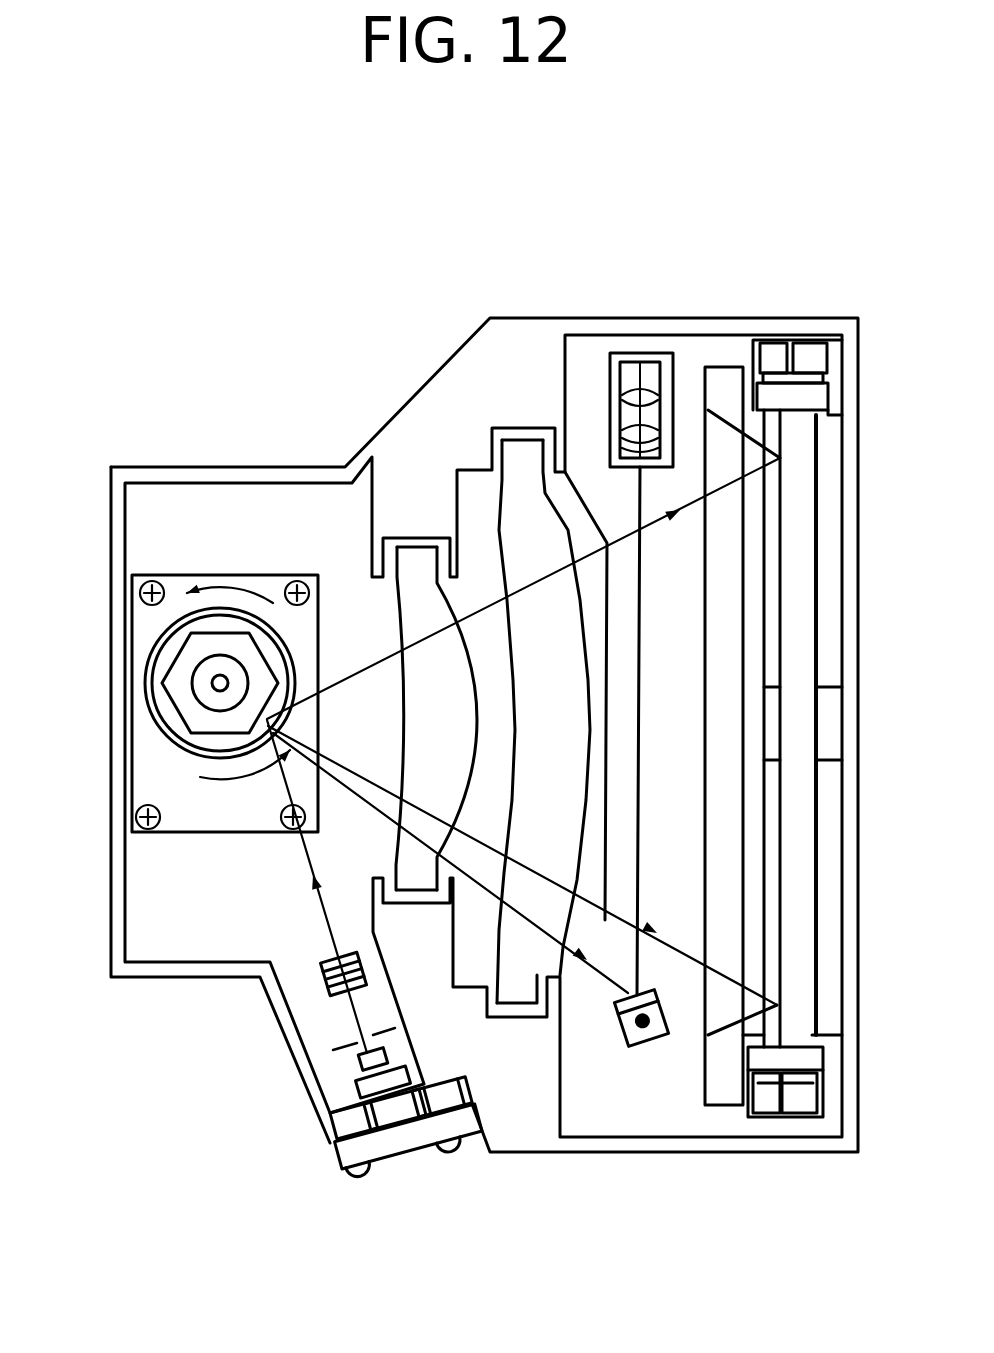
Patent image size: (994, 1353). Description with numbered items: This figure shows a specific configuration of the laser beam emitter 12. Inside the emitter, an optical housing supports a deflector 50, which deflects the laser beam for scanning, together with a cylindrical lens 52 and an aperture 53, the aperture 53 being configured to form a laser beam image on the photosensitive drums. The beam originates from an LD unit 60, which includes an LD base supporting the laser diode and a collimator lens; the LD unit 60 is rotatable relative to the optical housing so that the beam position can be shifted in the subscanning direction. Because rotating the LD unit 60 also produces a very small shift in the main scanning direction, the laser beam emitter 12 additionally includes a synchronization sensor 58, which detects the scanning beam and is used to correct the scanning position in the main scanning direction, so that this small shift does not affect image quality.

The laser beam emitter 12 is at (182, 447).
The deflector 50 is at (187, 667).
The cylindrical lens 52 is at (323, 988).
The aperture 53 is at (342, 1052).
The synchronization sensor 58 is at (668, 404).
The LD unit 60 is at (405, 1138).